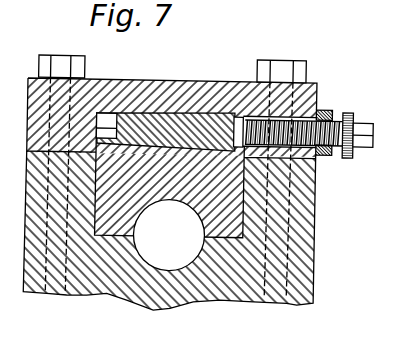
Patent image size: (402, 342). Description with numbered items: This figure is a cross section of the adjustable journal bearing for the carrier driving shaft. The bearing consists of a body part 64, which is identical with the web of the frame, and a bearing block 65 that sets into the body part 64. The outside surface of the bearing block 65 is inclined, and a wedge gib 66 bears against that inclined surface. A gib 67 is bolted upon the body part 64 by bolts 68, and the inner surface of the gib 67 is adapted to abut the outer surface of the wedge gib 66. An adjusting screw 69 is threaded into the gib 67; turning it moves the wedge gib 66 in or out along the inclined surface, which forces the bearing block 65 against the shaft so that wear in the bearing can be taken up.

The body part 64 is at (232, 292).
The bearing block 65 is at (167, 197).
The wedge gib 66 is at (156, 116).
The gib 67 is at (115, 84).
The bolts 68 is at (62, 59).
The adjusting screw 69 is at (346, 108).